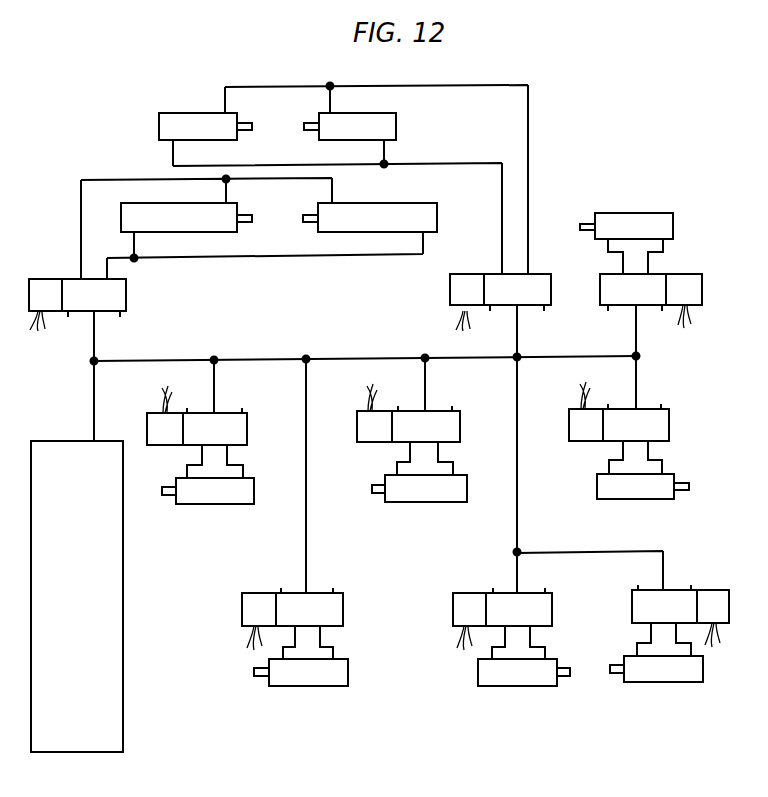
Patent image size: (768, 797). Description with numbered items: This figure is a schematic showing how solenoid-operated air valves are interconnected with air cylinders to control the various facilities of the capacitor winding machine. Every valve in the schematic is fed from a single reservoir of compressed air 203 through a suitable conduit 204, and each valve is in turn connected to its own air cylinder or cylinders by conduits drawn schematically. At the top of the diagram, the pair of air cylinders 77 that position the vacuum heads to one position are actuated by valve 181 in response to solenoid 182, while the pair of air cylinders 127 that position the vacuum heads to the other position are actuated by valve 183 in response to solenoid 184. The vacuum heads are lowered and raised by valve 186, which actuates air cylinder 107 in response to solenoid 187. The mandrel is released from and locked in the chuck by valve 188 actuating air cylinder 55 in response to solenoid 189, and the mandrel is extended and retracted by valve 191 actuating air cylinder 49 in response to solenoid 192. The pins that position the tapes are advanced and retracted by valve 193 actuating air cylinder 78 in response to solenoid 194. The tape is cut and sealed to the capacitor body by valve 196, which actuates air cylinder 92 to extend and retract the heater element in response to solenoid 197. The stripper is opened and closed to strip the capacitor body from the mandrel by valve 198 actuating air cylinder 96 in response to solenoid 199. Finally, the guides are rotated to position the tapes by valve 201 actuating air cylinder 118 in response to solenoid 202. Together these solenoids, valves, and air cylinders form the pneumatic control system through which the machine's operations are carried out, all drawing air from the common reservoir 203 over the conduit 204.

The air cylinders 77 is at (183, 113).
The air cylinders 127 is at (233, 232).
The air cylinder 118 is at (636, 213).
The solenoid 184 is at (52, 279).
The valve 183 is at (80, 304).
The conduit 204 is at (93, 390).
The solenoid 182 is at (450, 288).
The valve 181 is at (503, 298).
The valve 201 is at (621, 298).
The solenoid 202 is at (680, 274).
The valve 186 is at (199, 437).
The solenoid 187 is at (148, 413).
The air cylinder 107 is at (215, 504).
The valve 191 is at (409, 434).
The solenoid 192 is at (370, 442).
The air cylinder 49 is at (425, 502).
The valve 198 is at (621, 433).
The solenoid 199 is at (583, 441).
The air cylinder 96 is at (648, 499).
The valve 188 is at (293, 619).
The solenoid 189 is at (258, 593).
The air cylinder 55 is at (318, 686).
The valve 193 is at (505, 619).
The solenoid 194 is at (466, 593).
The air cylinder 78 is at (522, 686).
The valve 196 is at (649, 616).
The solenoid 197 is at (712, 590).
The air cylinder 92 is at (668, 682).
The reservoir of compressed air 203 is at (58, 587).